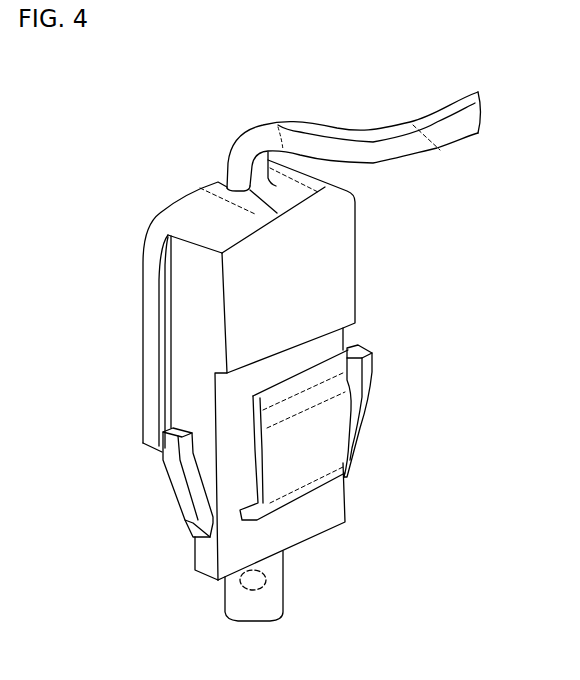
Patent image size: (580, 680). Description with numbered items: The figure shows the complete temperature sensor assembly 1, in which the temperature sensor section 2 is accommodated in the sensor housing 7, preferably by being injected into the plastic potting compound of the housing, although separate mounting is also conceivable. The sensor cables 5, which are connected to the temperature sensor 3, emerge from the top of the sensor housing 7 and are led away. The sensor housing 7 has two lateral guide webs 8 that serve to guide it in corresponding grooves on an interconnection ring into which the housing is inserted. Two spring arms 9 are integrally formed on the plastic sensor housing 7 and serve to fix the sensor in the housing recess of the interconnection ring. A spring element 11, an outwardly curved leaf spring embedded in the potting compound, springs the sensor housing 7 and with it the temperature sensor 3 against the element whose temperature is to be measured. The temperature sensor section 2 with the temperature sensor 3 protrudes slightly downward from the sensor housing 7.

The temperature sensor assembly 1 is at (437, 313).
The temperature sensor section 2 is at (294, 588).
The temperature sensor 3 is at (266, 564).
The sensor cables 5 is at (368, 153).
The sensor housing 7 is at (362, 250).
The guide webs 8 is at (150, 310).
The spring arms 9 is at (193, 490).
The spring element 11 is at (325, 437).